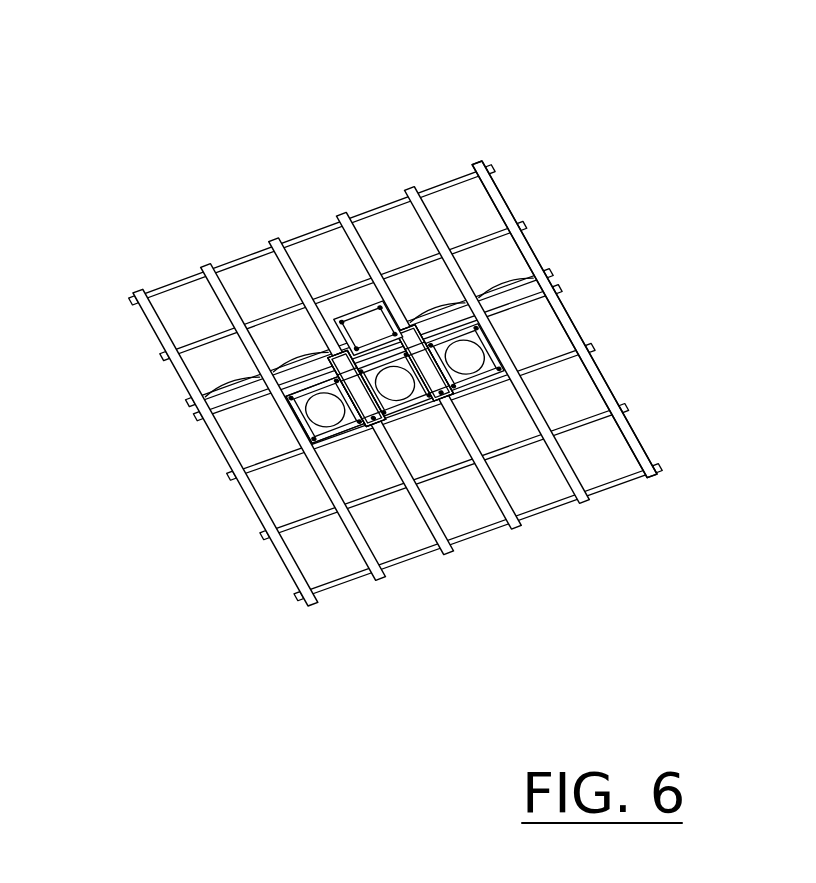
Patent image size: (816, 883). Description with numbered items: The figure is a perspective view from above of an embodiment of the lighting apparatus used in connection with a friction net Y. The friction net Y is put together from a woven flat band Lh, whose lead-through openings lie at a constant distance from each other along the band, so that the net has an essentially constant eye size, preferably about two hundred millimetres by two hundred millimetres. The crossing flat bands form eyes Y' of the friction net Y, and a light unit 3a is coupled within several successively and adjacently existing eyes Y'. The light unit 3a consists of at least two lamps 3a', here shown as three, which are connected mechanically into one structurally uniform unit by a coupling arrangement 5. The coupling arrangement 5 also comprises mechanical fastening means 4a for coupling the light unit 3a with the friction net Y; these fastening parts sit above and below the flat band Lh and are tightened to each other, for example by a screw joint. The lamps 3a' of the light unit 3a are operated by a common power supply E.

The woven flat band Lh is at (490, 151).
The friction net Y is at (395, 329).
The eyes of the friction net Y' is at (419, 384).
The light unit 3a is at (217, 449).
The lamp 3a' is at (466, 368).
The mechanical fastening means 4a is at (340, 435).
The coupling arrangement 5 is at (444, 407).
The common power supply E is at (348, 304).